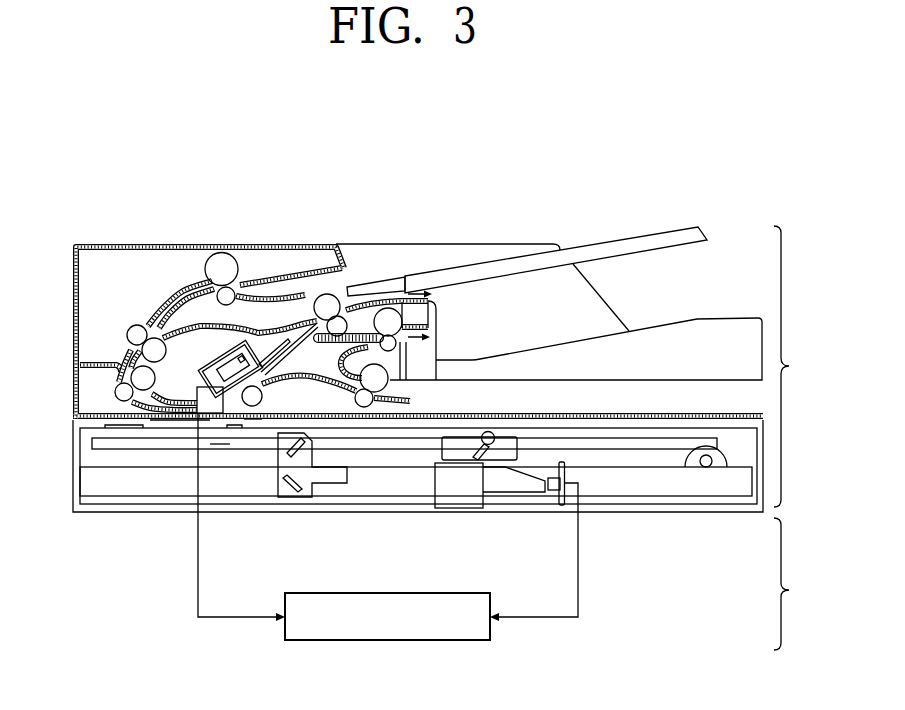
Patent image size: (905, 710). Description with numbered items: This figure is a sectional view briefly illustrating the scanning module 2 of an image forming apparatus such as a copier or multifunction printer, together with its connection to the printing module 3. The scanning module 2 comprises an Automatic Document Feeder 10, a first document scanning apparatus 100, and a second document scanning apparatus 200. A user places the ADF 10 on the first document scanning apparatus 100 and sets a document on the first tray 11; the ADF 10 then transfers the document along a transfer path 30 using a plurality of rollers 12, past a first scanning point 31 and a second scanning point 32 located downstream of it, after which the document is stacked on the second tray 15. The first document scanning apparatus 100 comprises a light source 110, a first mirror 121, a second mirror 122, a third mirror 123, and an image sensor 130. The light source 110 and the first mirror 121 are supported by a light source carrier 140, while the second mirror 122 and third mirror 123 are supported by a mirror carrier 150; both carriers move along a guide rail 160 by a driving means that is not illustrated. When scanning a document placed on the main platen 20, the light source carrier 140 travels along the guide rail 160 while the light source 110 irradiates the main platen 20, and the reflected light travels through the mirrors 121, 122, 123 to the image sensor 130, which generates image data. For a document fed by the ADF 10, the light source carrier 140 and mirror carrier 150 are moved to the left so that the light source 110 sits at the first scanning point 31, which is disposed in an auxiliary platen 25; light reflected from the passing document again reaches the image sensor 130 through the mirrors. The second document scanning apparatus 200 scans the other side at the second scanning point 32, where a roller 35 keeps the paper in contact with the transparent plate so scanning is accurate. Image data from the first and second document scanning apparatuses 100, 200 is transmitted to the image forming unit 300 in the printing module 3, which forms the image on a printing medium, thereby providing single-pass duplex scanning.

The scanning module 2 is at (365, 174).
The printing module 3 is at (790, 584).
The Automatic Document Feeder 10 is at (82, 236).
The first tray 11 is at (646, 227).
The rollers 12 is at (116, 390).
The second tray 15 is at (701, 318).
The main platen 20 is at (615, 428).
The auxiliary platen 25 is at (140, 428).
The transfer path 30 is at (280, 280).
The first scanning point 31 is at (177, 430).
The second scanning point 32 is at (263, 397).
The roller 35 is at (252, 410).
The first document scanning apparatus 100 is at (64, 517).
The light source 110 is at (495, 445).
The first mirror 121 is at (476, 458).
The second mirror 122 is at (289, 452).
The third mirror 123 is at (294, 490).
The image sensor 130 is at (546, 490).
The light source carrier 140 is at (443, 453).
The mirror carrier 150 is at (333, 483).
The guide rail 160 is at (219, 445).
The second document scanning apparatus 200 is at (206, 355).
The image forming unit 300 is at (389, 641).